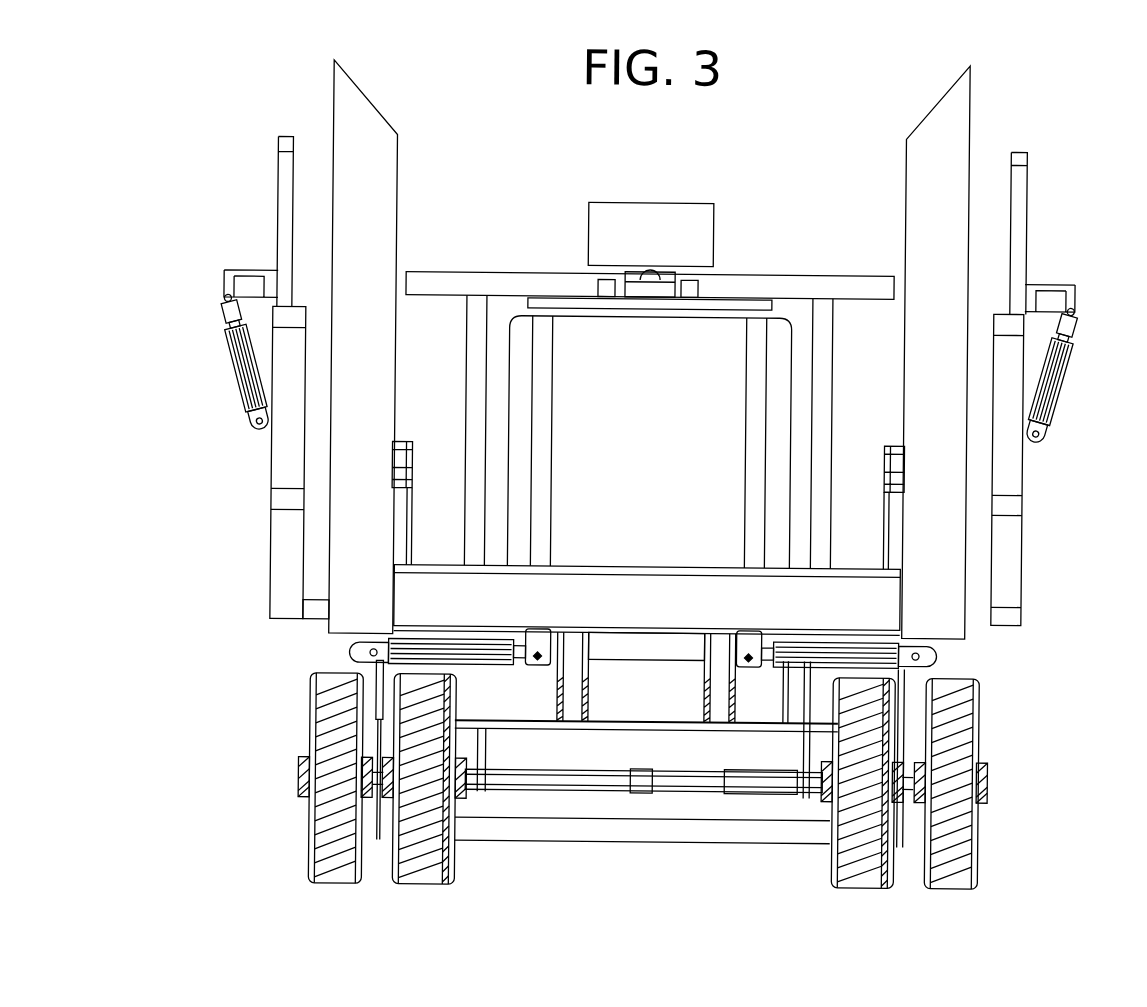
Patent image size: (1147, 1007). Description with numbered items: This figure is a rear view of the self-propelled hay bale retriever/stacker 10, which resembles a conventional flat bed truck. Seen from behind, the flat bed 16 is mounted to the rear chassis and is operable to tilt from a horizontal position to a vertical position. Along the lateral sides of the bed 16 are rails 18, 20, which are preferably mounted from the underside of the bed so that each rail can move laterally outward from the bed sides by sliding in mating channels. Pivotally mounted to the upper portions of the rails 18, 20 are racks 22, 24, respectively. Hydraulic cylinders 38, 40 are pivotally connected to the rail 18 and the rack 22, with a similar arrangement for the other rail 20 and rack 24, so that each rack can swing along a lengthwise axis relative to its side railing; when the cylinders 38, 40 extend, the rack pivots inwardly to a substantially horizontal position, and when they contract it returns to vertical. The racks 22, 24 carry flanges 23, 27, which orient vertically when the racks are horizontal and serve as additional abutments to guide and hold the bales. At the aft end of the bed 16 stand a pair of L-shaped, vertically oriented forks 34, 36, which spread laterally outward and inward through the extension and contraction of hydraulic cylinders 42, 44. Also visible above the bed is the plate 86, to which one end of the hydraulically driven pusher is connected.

The self-propelled hay bale retriever/stacker 10 is at (901, 70).
The flat bed 16 is at (648, 567).
The rail 18 is at (270, 531).
The rail 20 is at (1025, 531).
The rack 22 is at (270, 164).
The flange 23 is at (225, 274).
The rack 24 is at (1024, 179).
The flange 27 is at (1066, 281).
The fork 34 is at (378, 176).
The fork 36 is at (946, 190).
The hydraulic cylinder 38 is at (229, 371).
The hydraulic cylinder 40 is at (648, 369).
The hydraulic cylinder 42 is at (353, 649).
The hydraulic cylinder 44 is at (918, 642).
The plate 86 is at (643, 215).